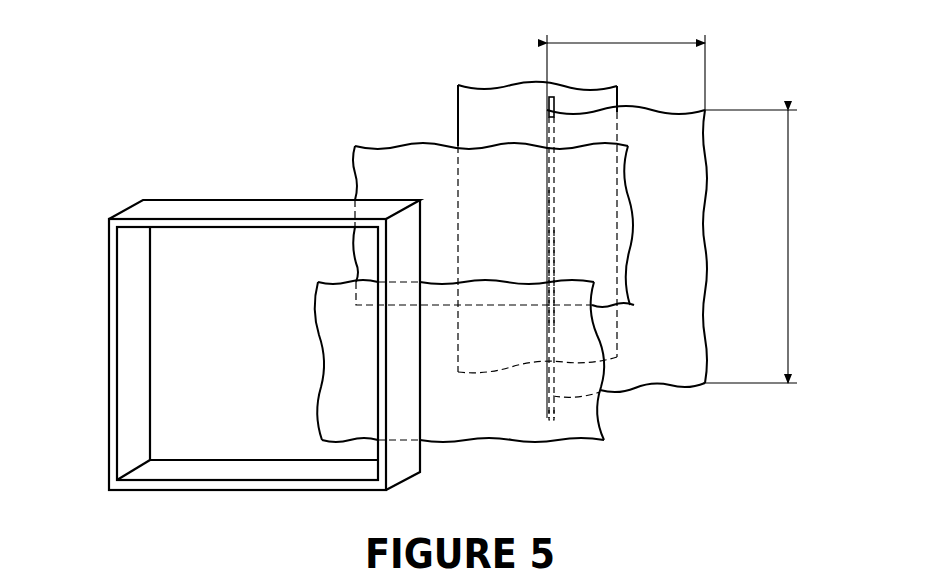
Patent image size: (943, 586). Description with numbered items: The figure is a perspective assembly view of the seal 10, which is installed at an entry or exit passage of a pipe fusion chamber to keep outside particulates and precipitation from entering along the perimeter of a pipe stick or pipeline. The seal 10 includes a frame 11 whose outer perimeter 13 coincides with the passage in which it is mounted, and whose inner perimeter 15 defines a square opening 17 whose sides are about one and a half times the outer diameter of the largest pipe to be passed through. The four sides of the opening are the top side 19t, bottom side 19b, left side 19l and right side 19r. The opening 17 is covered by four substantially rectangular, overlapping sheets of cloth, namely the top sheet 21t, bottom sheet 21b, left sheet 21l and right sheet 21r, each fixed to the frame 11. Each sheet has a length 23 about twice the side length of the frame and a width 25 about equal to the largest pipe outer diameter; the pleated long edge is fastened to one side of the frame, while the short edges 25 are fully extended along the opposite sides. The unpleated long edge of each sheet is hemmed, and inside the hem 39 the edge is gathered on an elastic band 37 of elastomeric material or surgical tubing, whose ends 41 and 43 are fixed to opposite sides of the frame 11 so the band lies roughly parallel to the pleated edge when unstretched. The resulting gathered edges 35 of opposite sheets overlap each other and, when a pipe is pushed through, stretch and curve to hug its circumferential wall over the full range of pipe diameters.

The seal 10 is at (263, 80).
The frame 11 is at (152, 193).
The outer perimeter 13 is at (335, 207).
The inner perimeter 15 is at (128, 300).
The square opening 17 is at (235, 407).
The top side 19t is at (258, 207).
The left side 19l is at (137, 452).
The bottom side 19b is at (315, 473).
The right side 19r is at (402, 465).
The top sheet of cloth 21t is at (422, 157).
The bottom sheet of cloth 21b is at (500, 427).
The left sheet of cloth 21l is at (513, 114).
The right sheet of cloth 21r is at (690, 293).
The length 23 is at (757, 385).
The width 25 is at (665, 43).
The gathered edge 35 is at (547, 230).
The elastic band 37 is at (550, 193).
The hem 39 is at (555, 173).
The end of elastic band 41 is at (557, 102).
The end of elastic band 43 is at (555, 412).